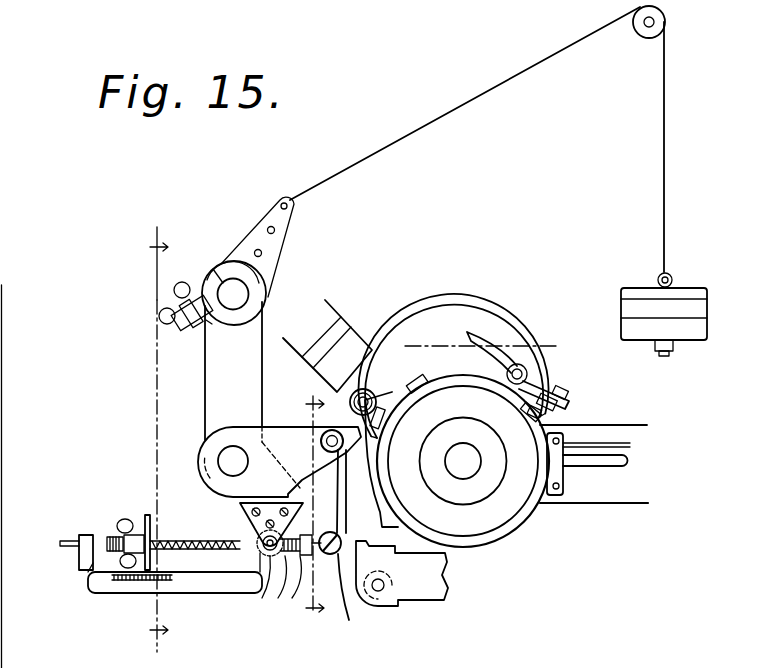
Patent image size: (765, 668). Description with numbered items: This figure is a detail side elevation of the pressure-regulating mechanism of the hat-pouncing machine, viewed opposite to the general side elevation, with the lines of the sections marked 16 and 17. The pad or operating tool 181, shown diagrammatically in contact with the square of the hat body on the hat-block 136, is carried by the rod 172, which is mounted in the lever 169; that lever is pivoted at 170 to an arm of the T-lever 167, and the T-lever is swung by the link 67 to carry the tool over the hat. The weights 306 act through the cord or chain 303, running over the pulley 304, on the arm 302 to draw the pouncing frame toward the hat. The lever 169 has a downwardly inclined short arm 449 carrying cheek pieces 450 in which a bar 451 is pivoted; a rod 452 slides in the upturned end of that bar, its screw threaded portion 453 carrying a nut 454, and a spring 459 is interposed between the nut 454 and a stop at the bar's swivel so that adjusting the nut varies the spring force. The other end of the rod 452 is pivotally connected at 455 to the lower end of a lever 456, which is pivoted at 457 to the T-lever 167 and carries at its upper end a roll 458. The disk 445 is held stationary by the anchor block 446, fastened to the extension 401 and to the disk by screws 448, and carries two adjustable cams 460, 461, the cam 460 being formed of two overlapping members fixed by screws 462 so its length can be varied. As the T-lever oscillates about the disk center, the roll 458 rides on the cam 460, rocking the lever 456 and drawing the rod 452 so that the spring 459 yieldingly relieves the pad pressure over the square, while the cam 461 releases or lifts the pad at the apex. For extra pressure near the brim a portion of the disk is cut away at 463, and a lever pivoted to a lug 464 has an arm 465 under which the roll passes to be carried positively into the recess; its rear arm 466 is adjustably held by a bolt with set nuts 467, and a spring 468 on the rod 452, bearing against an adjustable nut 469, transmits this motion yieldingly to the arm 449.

The pulley 304 is at (655, 25).
The cord or chain 303 is at (339, 227).
The weights 306 is at (633, 328).
The arm 302 is at (281, 222).
The rod 172 is at (235, 294).
The lever 169 is at (219, 383).
The T-lever 167 is at (252, 438).
The link 67 is at (425, 598).
The pivot 170 is at (233, 461).
The pad or operating tool 181 is at (338, 328).
The hat-block 136 is at (418, 346).
The section line 16— 16 is at (159, 431).
The section line 17— 17 is at (320, 508).
The pivot 457 is at (324, 434).
The roll 458 is at (367, 390).
The disk 445 is at (490, 542).
The cam 461 is at (377, 493).
The cam 460 is at (383, 413).
The recess or depression 463 is at (478, 401).
The screws 462 is at (454, 366).
The arm 465 is at (480, 320).
The lug 464 is at (526, 379).
The set nuts 467 is at (571, 393).
The rear arm 466 is at (563, 405).
The extension 401 is at (630, 431).
The screws 448 is at (580, 522).
The anchor block 446 is at (607, 458).
The lever 456 is at (335, 505).
The pivot connection 455 is at (356, 551).
The short arm 449 is at (238, 516).
The cheek pieces 450 is at (240, 526).
The spring 459 is at (163, 549).
The spring 468 is at (318, 545).
The adjustable nut 469 is at (300, 563).
The bar 451 is at (202, 583).
The screw threaded portion 453 is at (113, 548).
The nut 454 is at (137, 530).
The rod 452 is at (100, 538).